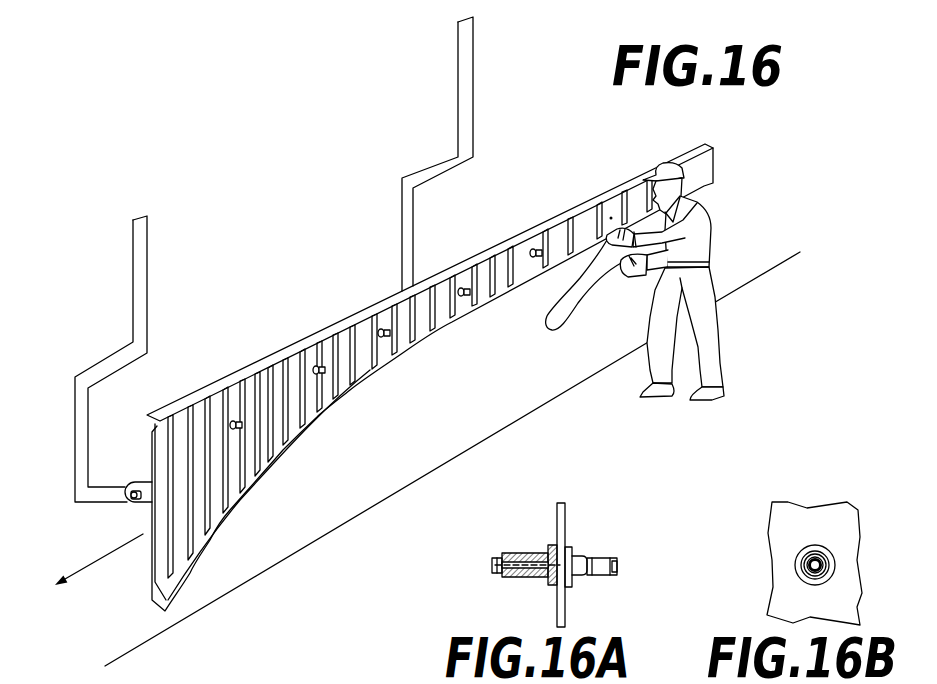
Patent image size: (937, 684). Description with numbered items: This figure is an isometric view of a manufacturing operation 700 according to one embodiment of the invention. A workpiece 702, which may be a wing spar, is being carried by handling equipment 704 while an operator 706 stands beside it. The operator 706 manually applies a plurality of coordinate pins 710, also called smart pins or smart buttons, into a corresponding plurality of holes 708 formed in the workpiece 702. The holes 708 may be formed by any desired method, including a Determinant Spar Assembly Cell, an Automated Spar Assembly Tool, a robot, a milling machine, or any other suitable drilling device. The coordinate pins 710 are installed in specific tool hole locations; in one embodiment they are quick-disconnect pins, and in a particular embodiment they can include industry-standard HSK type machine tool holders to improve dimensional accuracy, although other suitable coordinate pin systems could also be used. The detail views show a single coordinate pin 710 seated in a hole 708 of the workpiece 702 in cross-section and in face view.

In FIG. 16, the manufacturing operation 700 is at (780, 344).
In FIG. 16, the workpiece 702 is at (713, 168).
In FIG. 16A, the workpiece 702 is at (562, 502).
In FIG. 16B, the workpiece 702 is at (855, 503).
In FIG. 16, the handling equipment 704 is at (382, 175).
In FIG. 16, the operator 706 is at (742, 224).
In FIG. 16, the holes 708 is at (235, 422).
In FIG. 16A, the holes 708 is at (555, 546).
In FIG. 16, the coordinate pins 710 is at (386, 333).
In FIG. 16A, the coordinate pins 710 is at (613, 577).
In FIG. 16B, the coordinate pins 710 is at (828, 560).